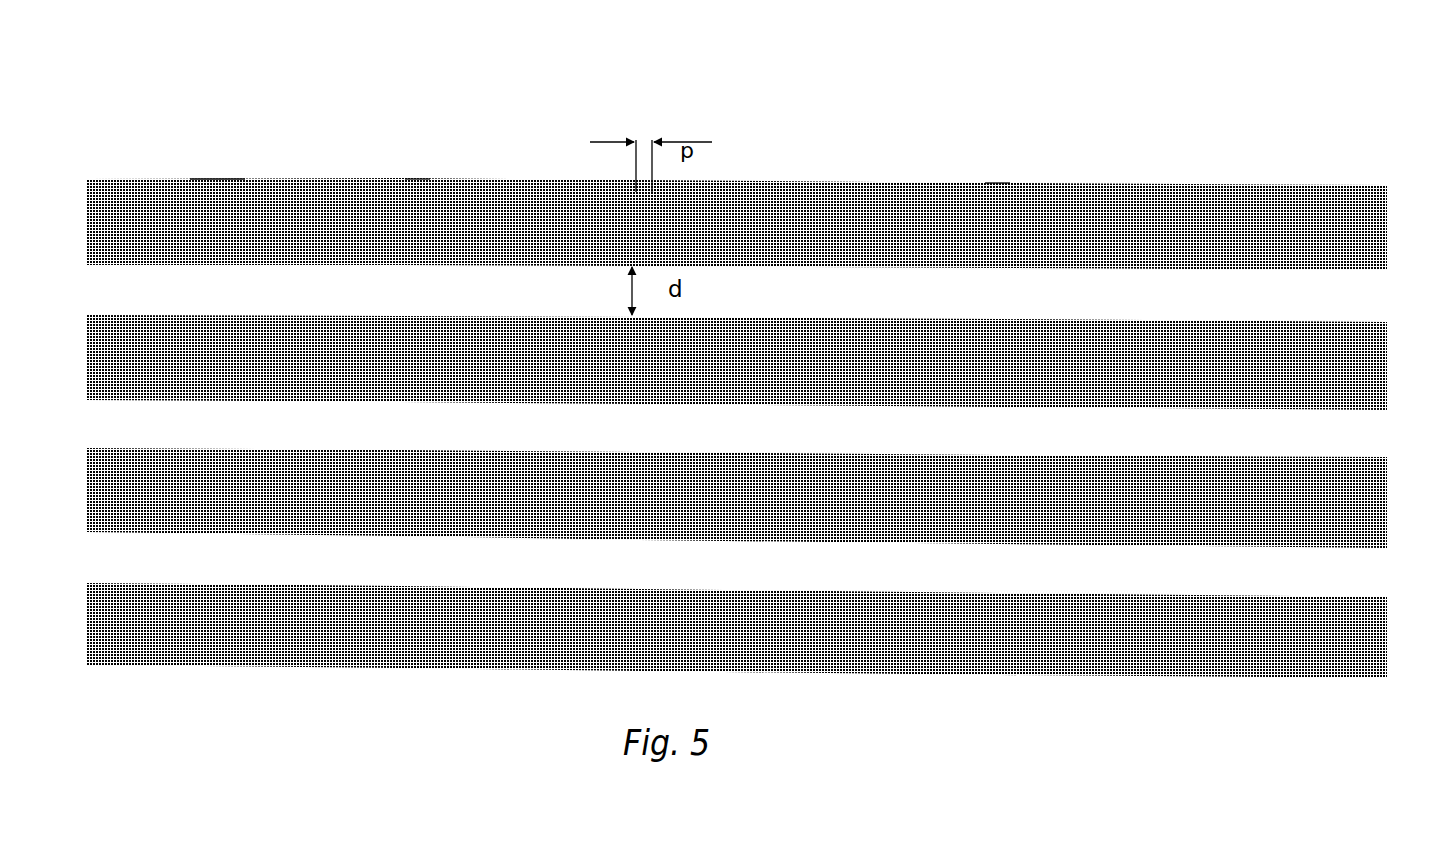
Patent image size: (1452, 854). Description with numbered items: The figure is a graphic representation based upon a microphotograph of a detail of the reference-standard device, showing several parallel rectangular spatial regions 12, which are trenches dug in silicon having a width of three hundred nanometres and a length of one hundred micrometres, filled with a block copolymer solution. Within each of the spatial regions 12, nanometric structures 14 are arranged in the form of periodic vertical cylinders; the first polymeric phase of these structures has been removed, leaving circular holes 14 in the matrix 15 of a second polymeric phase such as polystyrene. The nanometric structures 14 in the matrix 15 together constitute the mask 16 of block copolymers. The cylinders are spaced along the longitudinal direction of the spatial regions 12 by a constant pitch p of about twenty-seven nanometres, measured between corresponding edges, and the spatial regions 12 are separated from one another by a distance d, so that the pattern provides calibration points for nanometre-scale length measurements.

The spatial regions 12 is at (1387, 229).
The nanometric structures 14 is at (202, 179).
The matrix 15 is at (417, 179).
The mask 16 is at (997, 183).